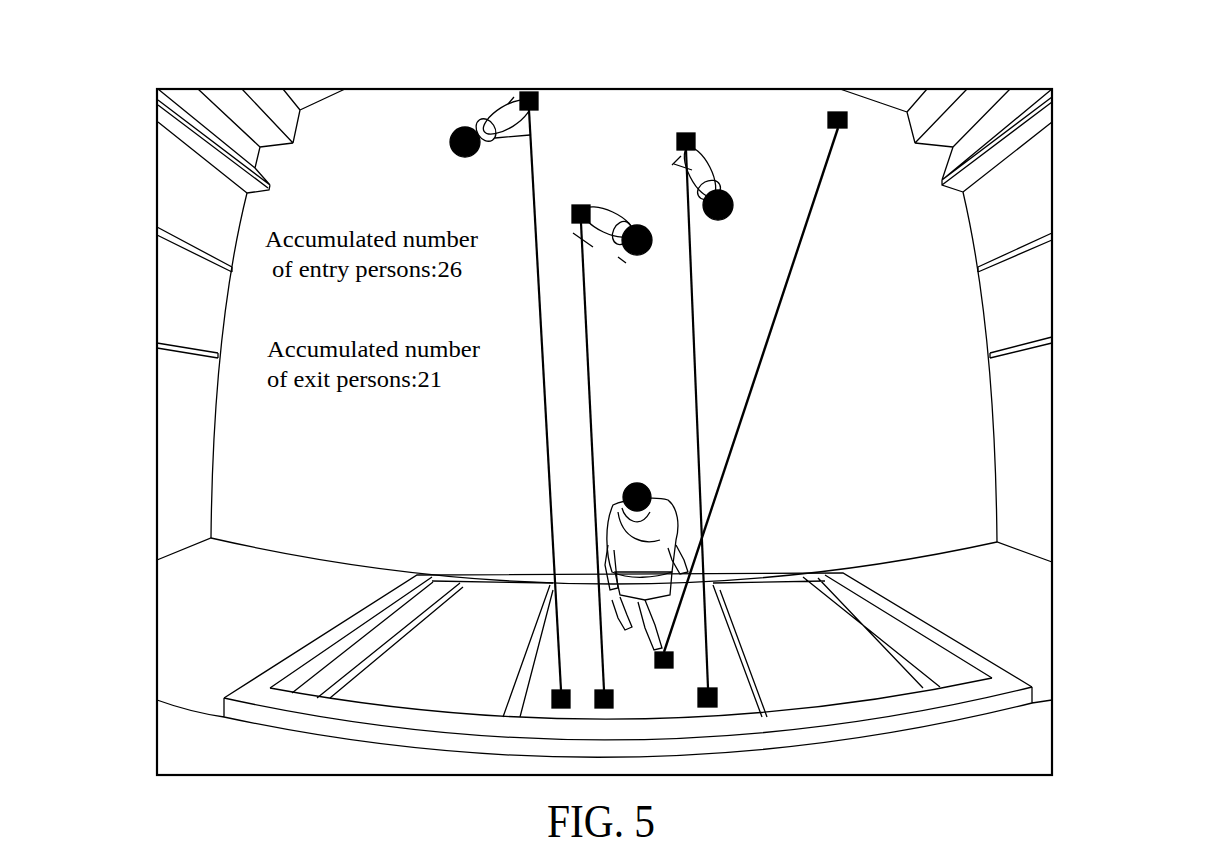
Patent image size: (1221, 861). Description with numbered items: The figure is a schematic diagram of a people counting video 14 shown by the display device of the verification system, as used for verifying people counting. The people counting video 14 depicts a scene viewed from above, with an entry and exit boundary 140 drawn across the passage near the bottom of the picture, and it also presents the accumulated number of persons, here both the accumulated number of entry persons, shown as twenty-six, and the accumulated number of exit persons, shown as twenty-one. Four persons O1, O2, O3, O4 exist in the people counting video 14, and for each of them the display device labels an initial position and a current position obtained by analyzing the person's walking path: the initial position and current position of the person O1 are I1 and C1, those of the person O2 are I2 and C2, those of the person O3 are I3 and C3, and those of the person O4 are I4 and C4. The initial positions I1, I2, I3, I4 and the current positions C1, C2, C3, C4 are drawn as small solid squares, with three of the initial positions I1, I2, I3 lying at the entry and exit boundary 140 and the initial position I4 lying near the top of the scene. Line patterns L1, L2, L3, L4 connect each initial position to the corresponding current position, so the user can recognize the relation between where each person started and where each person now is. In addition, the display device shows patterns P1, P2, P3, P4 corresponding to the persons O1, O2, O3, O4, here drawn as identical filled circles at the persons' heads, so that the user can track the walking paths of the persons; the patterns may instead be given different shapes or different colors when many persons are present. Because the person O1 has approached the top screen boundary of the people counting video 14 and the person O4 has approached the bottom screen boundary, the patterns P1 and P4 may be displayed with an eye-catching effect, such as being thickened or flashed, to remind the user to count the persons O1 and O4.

The people counting video 14 is at (1098, 99).
The entry and exit boundary 140 is at (576, 565).
The current position C1 is at (534, 92).
The current position C2 is at (590, 206).
The current position C3 is at (694, 134).
The current position C4 is at (666, 669).
The initial position I1 is at (559, 708).
The initial position I2 is at (604, 708).
The initial position I3 is at (708, 707).
The initial position I4 is at (838, 112).
The line pattern L1 is at (537, 400).
The line pattern L2 is at (604, 456).
The line pattern L3 is at (688, 419).
The line pattern L4 is at (751, 390).
The pattern P1 is at (478, 139).
The pattern P2 is at (625, 241).
The pattern P3 is at (720, 196).
The pattern P4 is at (646, 543).
The person O1 is at (433, 124).
The person O2 is at (660, 215).
The person O3 is at (718, 220).
The person O4 is at (635, 464).